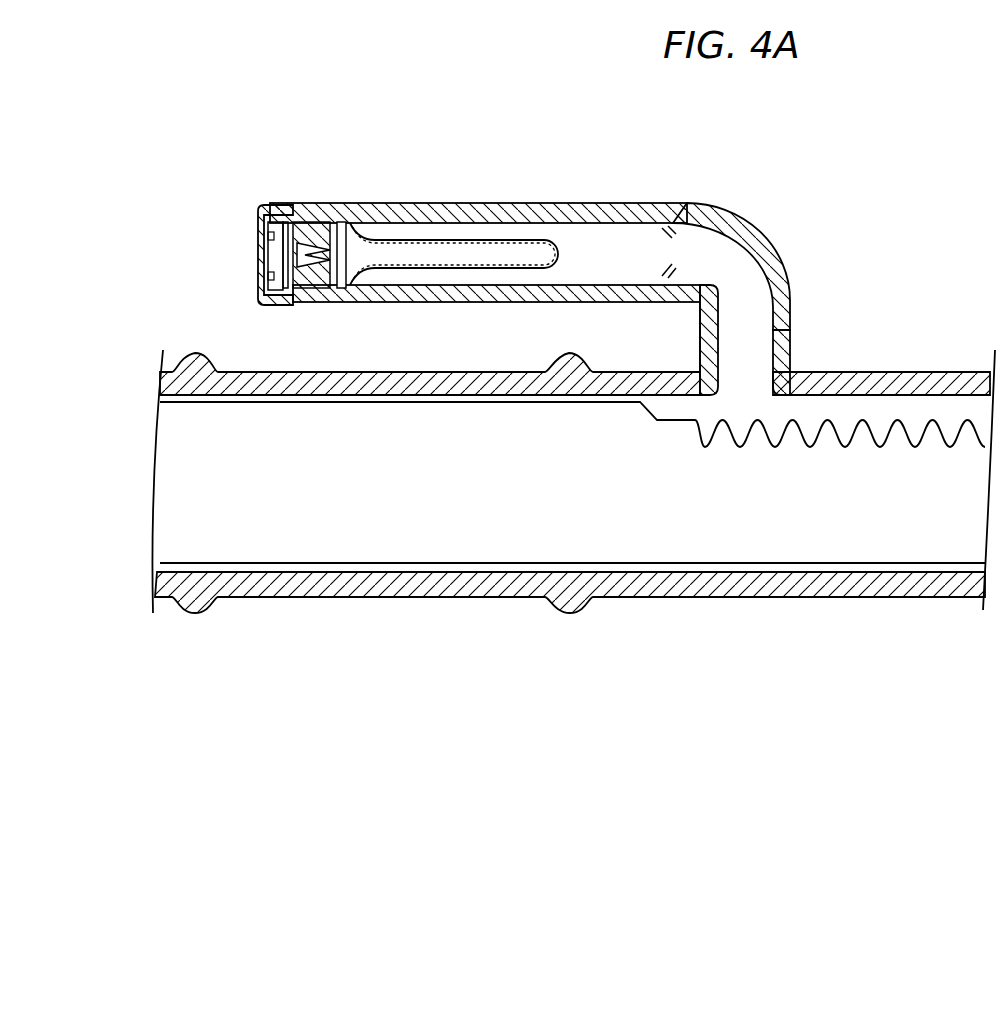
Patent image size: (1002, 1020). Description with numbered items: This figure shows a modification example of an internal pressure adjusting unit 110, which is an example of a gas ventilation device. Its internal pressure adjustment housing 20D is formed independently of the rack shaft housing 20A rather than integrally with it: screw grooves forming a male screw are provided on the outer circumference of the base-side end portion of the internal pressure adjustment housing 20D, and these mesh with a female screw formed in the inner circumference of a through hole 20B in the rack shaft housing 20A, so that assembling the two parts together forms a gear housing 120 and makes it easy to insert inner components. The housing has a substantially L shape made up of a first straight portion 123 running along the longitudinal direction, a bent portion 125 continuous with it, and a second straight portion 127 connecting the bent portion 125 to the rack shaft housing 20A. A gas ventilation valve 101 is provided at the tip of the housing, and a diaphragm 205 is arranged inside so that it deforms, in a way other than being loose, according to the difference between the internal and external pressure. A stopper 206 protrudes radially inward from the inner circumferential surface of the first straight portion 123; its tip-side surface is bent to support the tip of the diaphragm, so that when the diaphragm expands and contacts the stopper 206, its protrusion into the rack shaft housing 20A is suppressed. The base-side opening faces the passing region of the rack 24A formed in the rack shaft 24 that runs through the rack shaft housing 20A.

The internal pressure adjusting unit 110 is at (838, 207).
The gas ventilation valve 101 is at (258, 250).
The diaphragm 205 is at (455, 240).
The internal pressure adjustment housing 20D is at (593, 204).
The stopper 206 is at (688, 222).
The through hole 20B is at (787, 373).
The rack shaft housing 20A is at (392, 370).
The first straight portion 123 is at (498, 303).
The bent portion 125 is at (697, 320).
The second straight portion 127 is at (697, 355).
The rack shaft 24 is at (933, 412).
The rack 24A is at (863, 420).
The gear housing 120 is at (573, 514).